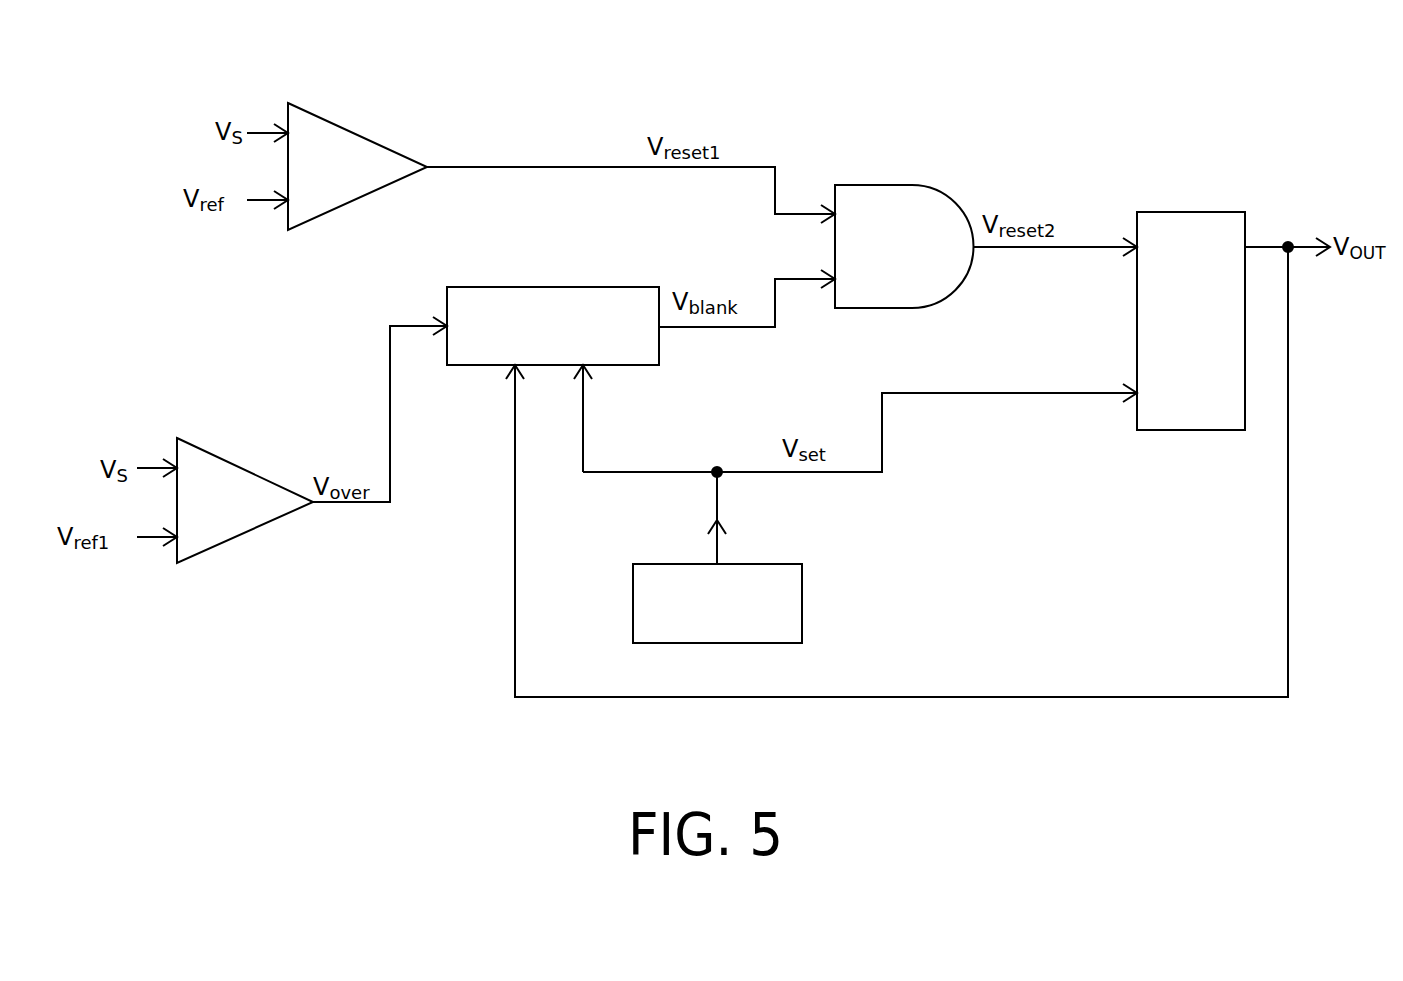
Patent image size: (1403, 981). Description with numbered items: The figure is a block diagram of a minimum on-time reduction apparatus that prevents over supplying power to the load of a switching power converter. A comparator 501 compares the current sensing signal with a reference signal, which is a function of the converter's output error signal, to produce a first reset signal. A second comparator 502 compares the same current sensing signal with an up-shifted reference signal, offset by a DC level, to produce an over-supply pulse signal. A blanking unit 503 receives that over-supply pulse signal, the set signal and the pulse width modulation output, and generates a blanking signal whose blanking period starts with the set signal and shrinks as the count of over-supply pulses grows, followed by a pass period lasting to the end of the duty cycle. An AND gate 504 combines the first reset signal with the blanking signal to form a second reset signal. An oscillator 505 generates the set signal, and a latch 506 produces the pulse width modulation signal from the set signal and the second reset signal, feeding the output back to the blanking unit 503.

The comparator 501 is at (357, 133).
The comparator 502 is at (240, 465).
The blanking unit 503 is at (568, 287).
The AND gate 504 is at (913, 185).
The oscillator 505 is at (802, 603).
The latch 506 is at (1190, 212).